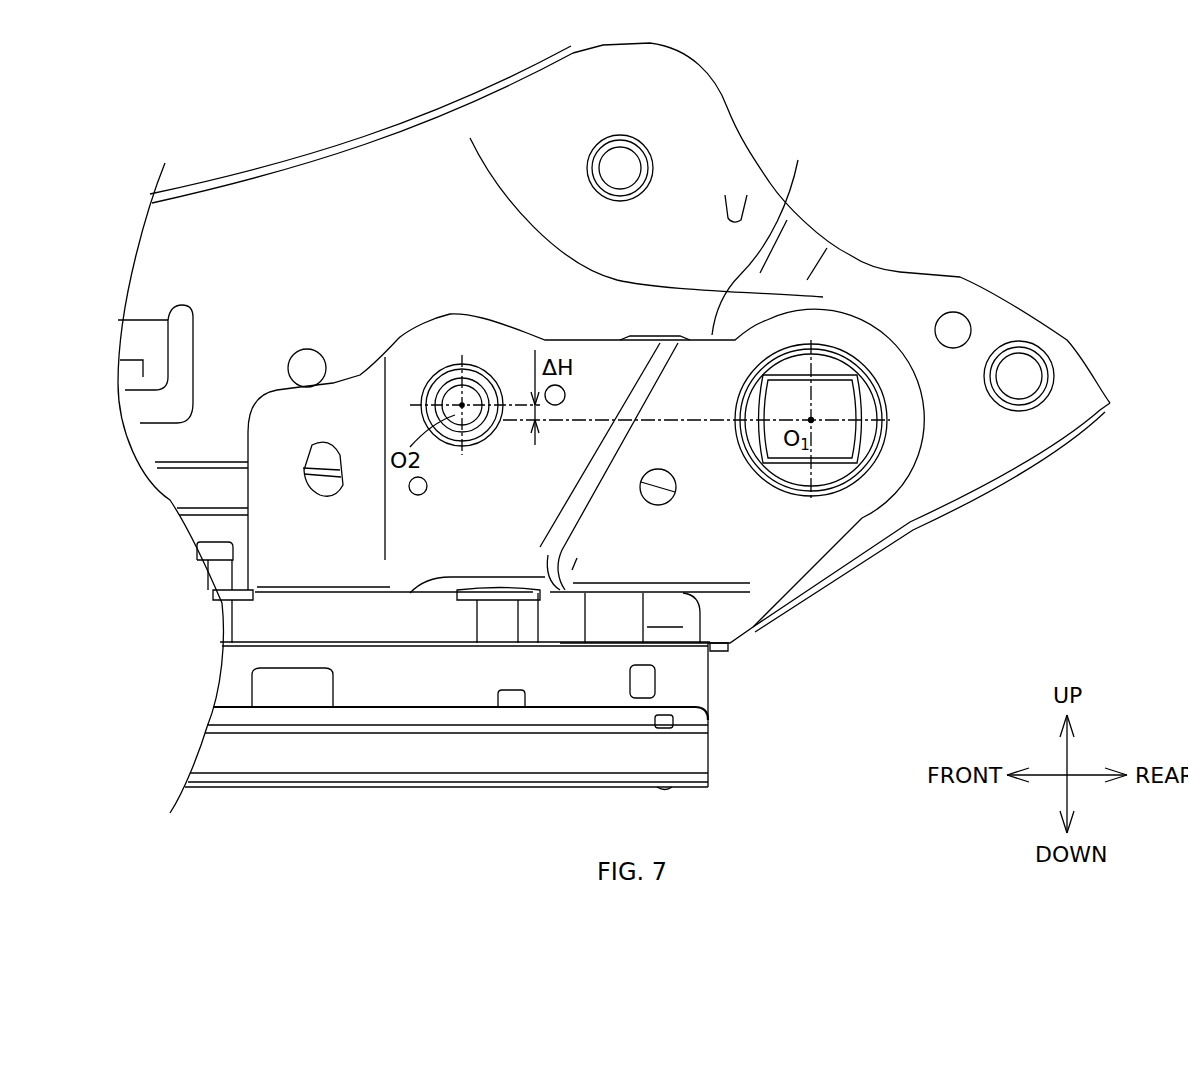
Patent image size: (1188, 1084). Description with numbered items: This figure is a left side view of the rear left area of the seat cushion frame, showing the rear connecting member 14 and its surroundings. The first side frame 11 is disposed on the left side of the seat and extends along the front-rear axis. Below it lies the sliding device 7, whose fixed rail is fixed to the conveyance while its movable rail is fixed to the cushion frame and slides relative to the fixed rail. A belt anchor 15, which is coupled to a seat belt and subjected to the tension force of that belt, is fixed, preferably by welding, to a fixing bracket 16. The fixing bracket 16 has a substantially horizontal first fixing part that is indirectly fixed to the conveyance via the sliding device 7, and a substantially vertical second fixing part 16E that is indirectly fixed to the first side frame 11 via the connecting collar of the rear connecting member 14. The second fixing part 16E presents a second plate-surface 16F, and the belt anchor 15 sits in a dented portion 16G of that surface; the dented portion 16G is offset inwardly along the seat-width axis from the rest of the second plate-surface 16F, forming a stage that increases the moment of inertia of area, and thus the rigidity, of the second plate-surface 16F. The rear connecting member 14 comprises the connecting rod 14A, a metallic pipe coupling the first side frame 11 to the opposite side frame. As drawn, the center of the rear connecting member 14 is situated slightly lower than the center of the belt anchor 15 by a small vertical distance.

The first side frame 11 is at (352, 150).
The rear connecting member 14 is at (847, 353).
The connecting rod 14A is at (843, 447).
The belt anchor 15 is at (482, 366).
The fixing bracket 16 is at (397, 333).
The second fixing part 16E is at (767, 234).
The second plate-surface 16F is at (780, 545).
The dented portion 16G is at (417, 543).
The sliding device 7 is at (463, 760).